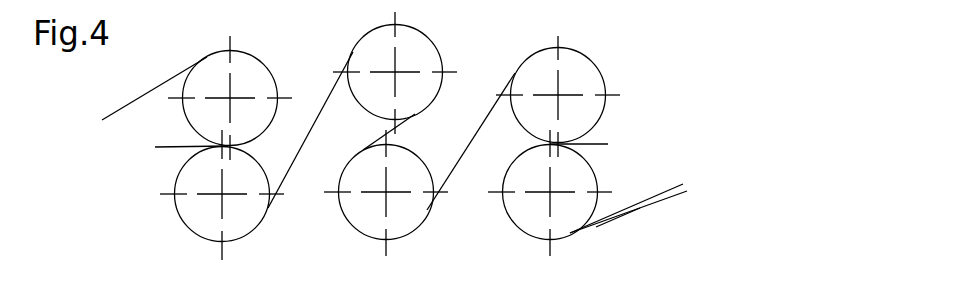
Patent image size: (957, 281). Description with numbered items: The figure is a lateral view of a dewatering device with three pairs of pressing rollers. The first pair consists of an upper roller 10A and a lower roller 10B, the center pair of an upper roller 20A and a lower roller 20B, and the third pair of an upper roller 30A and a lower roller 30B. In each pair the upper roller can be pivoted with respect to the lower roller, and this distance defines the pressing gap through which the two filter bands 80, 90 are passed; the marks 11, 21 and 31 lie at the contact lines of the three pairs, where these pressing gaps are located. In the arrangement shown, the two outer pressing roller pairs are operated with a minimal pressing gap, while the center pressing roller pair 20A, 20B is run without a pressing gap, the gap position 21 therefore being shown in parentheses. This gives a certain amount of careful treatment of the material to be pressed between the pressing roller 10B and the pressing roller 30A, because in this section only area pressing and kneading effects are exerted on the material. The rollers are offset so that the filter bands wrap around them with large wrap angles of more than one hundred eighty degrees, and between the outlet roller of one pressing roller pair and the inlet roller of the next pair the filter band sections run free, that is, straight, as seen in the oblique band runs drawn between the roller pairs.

The upper roller of the first pressing roller pair 10A is at (248, 77).
The lower roller of the first pressing roller pair 10B is at (242, 222).
The nip of first roller pair 11 is at (176, 146).
The upper roller of the center pressing roller pair 20A is at (422, 63).
The lower roller of the center pressing roller pair 20B is at (405, 215).
The gap between second roller pair 21 is at (415, 133).
The upper roller of the third pressing roller pair 30A is at (577, 75).
The lower roller of the third pressing roller pair 30B is at (560, 222).
The nip of third roller pair 31 is at (596, 144).
The filter band 80 is at (664, 194).
The filter band 90 is at (664, 200).